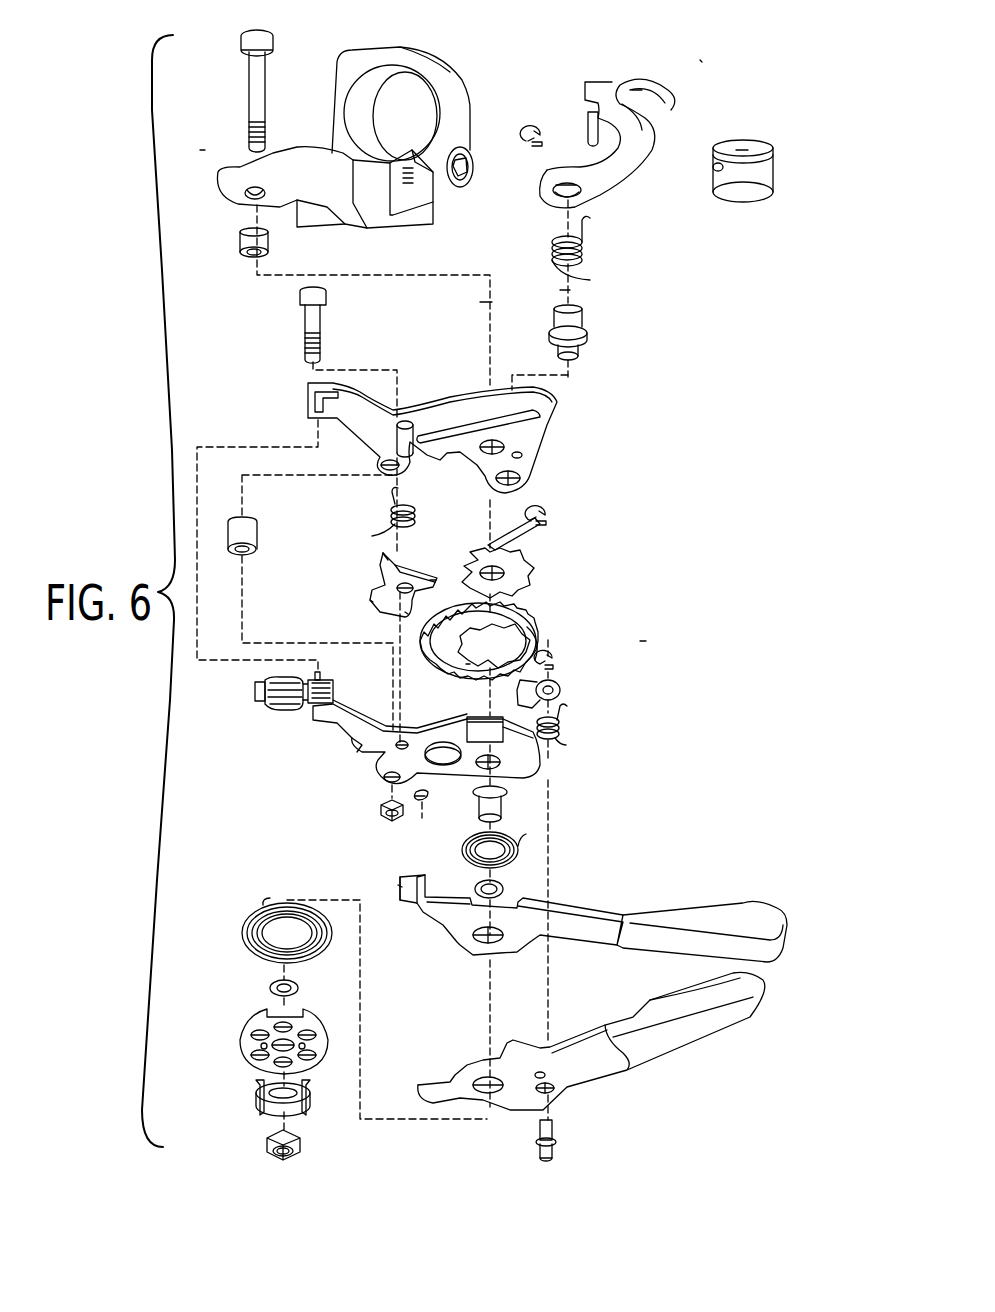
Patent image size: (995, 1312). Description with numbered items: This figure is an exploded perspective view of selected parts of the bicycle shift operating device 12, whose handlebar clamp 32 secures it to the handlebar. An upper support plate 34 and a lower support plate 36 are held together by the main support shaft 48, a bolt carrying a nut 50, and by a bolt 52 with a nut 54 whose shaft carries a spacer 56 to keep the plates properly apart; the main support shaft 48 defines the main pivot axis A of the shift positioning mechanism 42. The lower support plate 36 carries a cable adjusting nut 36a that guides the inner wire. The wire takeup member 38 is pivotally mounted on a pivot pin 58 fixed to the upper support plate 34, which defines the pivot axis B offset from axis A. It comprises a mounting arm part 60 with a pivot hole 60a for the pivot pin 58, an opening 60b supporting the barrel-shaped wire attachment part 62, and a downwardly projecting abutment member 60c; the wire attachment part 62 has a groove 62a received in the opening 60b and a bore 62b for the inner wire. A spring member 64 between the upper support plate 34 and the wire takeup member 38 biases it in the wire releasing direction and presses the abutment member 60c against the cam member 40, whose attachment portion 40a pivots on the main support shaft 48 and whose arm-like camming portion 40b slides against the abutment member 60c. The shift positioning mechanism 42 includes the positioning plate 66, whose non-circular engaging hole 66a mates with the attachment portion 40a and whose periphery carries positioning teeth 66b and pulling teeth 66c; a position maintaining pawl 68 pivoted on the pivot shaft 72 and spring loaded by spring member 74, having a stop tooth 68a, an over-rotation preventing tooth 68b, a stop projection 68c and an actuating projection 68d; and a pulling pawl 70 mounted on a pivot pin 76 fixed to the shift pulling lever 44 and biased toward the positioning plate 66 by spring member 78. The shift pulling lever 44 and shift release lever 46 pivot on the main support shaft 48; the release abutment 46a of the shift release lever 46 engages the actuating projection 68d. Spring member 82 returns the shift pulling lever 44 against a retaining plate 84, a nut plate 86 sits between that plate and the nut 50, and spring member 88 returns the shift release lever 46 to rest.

The bicycle shift operating device 12 is at (218, 143).
The handlebar clamp 32 is at (466, 64).
The upper support plate 34 is at (540, 468).
The lower support plate 36 is at (530, 775).
The cable adjusting nut 36a is at (275, 706).
The wire takeup member 38 is at (708, 50).
The cam member 40 is at (540, 532).
The attachment portion 40a is at (530, 575).
The camming portion 40b is at (540, 534).
The shift positioning mechanism 42 is at (637, 645).
The shift pulling lever 44 is at (697, 1047).
The shift release lever 46 is at (670, 920).
The release abutment 46a is at (400, 888).
The main support shaft 48 is at (268, 102).
The nut 50 is at (268, 1142).
The bolt 52 is at (300, 303).
The nut 54 is at (380, 807).
The spacer 56 is at (262, 529).
The pivot pin 58 is at (588, 336).
The mounting arm part 60 is at (668, 78).
The pivot hole 60a is at (563, 196).
The opening 60b is at (638, 96).
The abutment member 60c is at (590, 128).
The wire attachment part 62 is at (740, 146).
The groove 62a is at (748, 150).
The bore 62b is at (712, 168).
The spring member 64 is at (585, 250).
The positioning plate 66 is at (442, 643).
The engaging hole 66a is at (525, 640).
The positioning teeth 66b is at (520, 613).
The pulling teeth 66c is at (470, 662).
The position maintaining pawl 68 is at (376, 578).
The stop tooth 68a is at (440, 578).
The over-rotation preventing tooth 68b is at (400, 608).
The stop projection 68c is at (372, 603).
The actuating projection 68d is at (384, 556).
The pulling pawl 70 is at (560, 688).
The pivot shaft 72 is at (413, 447).
The spring member 74 is at (388, 512).
The pivot pin 76 is at (555, 1138).
The spring member 78 is at (566, 723).
The spring member 82 is at (252, 910).
The retaining plate 84 is at (252, 1027).
The nut plate 86 is at (256, 1095).
The spring member 88 is at (468, 856).
The main pivot axis A is at (490, 320).
The pivot axis B is at (568, 292).